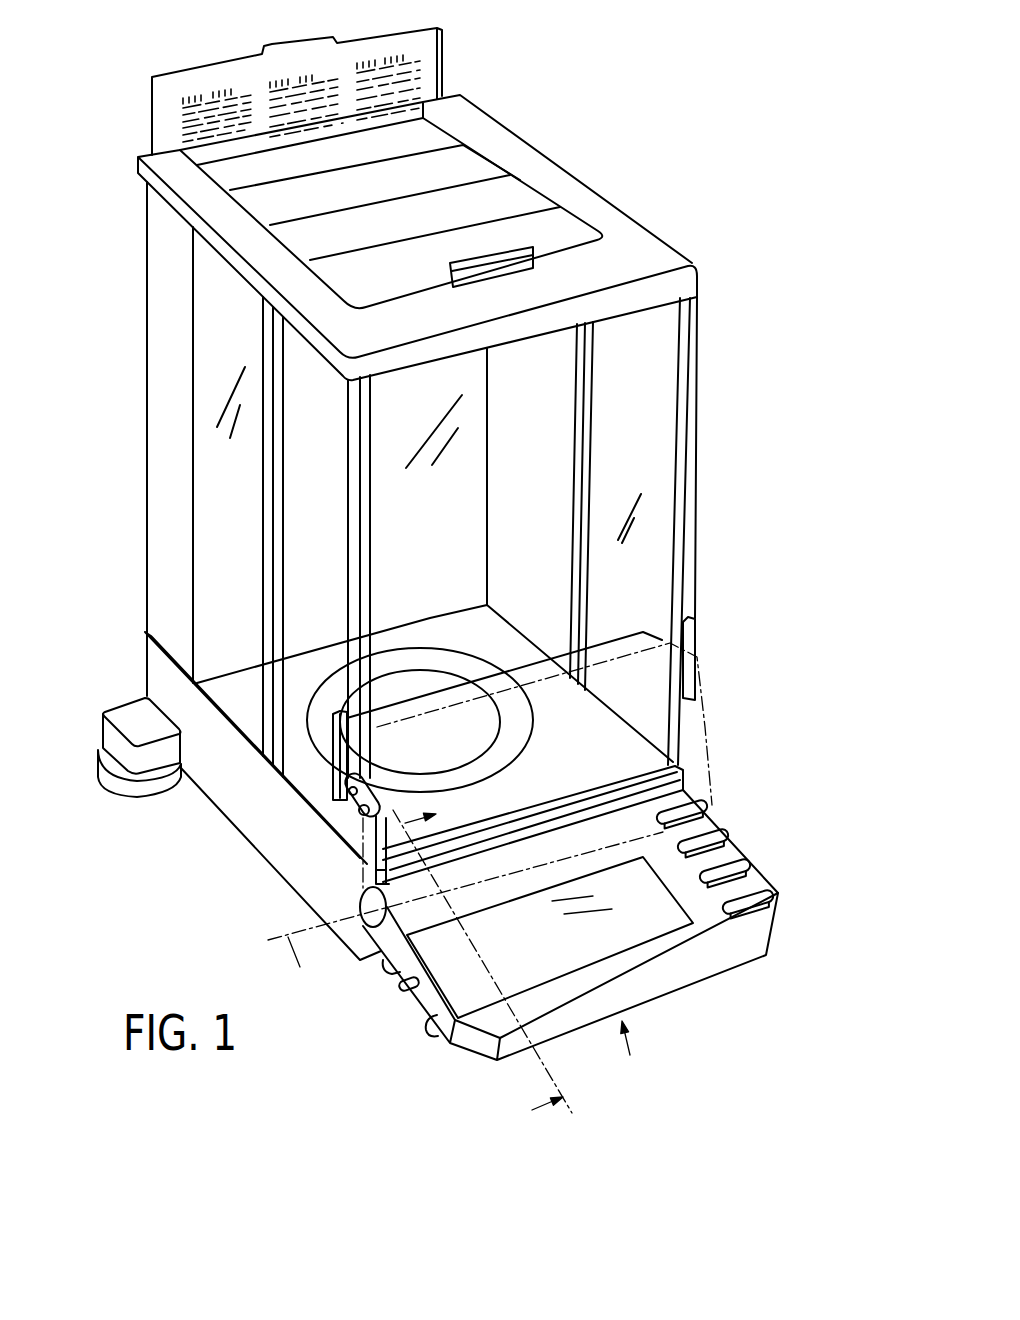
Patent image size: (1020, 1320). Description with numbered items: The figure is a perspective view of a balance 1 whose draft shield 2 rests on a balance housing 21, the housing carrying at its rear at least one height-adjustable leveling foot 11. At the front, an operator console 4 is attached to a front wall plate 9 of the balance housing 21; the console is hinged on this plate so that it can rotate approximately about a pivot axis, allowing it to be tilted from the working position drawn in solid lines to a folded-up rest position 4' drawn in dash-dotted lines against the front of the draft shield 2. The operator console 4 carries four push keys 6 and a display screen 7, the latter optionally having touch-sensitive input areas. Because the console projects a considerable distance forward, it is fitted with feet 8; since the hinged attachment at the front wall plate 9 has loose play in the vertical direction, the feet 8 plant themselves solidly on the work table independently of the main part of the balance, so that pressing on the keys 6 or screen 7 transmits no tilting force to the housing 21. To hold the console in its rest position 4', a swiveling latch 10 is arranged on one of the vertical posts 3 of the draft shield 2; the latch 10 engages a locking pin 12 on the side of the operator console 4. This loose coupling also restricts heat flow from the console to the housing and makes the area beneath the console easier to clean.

The balance 1 is at (679, 172).
The draft shield 2 is at (651, 458).
The vertical posts 3 is at (691, 372).
The operator console 4 is at (604, 913).
The folded-up rest position 4' is at (583, 724).
The push keys 6 is at (708, 837).
The display screen 7 is at (538, 952).
The feet 8 is at (386, 972).
The front wall plate 9 is at (378, 965).
The swiveling latch 10 is at (347, 787).
The height-adjustable leveling foot 11 is at (98, 778).
The locking pin 12 is at (400, 993).
The balance housing 21 is at (288, 835).